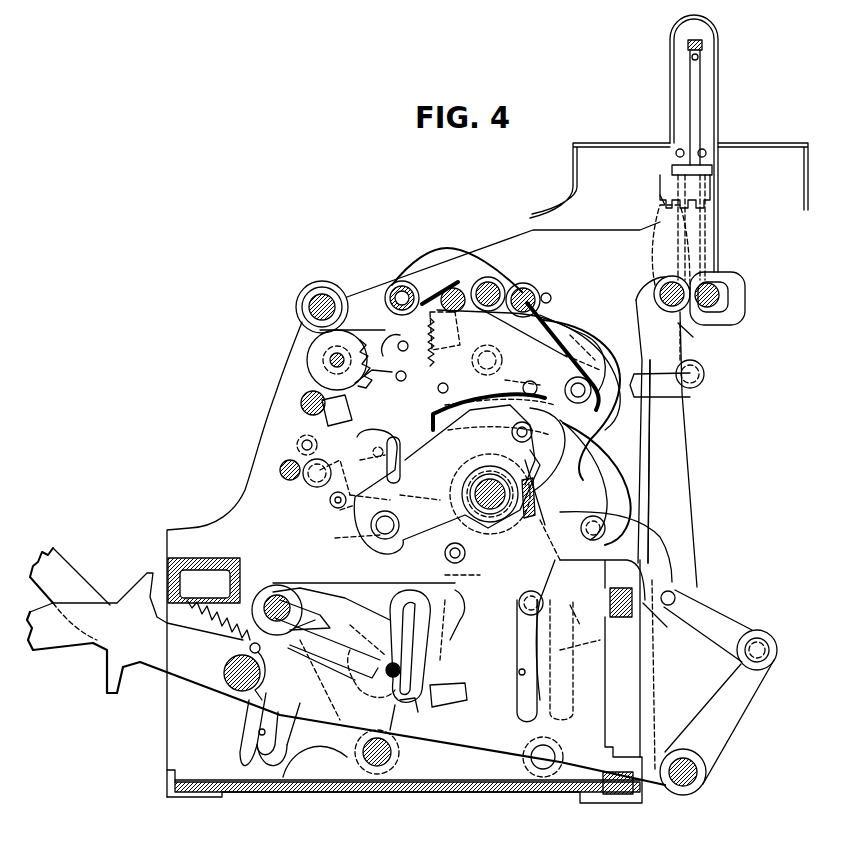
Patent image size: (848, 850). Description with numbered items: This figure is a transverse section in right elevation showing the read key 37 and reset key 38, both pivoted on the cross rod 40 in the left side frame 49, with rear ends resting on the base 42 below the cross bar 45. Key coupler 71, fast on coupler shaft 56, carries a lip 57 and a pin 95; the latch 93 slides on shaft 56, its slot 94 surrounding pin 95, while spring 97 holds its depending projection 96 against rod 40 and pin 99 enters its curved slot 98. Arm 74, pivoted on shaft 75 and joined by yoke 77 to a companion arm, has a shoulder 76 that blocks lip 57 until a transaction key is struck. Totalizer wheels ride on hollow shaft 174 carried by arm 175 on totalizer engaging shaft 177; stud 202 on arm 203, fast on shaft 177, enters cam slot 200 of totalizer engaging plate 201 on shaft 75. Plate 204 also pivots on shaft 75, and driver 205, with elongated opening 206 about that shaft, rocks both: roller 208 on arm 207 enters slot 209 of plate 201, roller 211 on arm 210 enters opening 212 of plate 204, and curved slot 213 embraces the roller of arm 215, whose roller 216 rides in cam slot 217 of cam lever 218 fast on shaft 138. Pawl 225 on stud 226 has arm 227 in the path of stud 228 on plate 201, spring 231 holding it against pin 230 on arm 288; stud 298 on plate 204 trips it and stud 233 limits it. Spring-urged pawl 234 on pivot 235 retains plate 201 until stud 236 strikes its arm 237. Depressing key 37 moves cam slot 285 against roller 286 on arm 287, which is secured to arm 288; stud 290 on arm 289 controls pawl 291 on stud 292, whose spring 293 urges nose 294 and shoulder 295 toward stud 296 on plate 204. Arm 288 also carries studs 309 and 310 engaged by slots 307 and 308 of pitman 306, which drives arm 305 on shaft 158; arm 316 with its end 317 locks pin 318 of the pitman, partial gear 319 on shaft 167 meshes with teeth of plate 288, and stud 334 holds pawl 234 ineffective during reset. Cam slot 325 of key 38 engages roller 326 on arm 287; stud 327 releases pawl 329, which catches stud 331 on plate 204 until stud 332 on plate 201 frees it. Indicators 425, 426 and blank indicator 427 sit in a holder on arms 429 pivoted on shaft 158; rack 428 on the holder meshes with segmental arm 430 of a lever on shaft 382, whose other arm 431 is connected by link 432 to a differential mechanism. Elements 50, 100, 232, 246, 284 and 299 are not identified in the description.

The read key 37 is at (62, 562).
The reset key 38 is at (50, 650).
The cross rod 40 is at (232, 670).
The base 42 is at (514, 790).
The cross bar 45 is at (610, 603).
The left side frame 49 is at (175, 733).
The stop bracket 50 is at (208, 558).
The coupler shaft 56 is at (297, 627).
The lip 57 is at (412, 706).
The key coupler 71 is at (277, 588).
The arm 74 is at (450, 612).
The shaft 75 is at (480, 488).
The shoulder 76 is at (443, 690).
The yoke 77 is at (537, 505).
The latch 93 is at (318, 617).
The slot 94 is at (382, 635).
The pin 95 is at (333, 674).
The depending projection 96 is at (266, 692).
The spring 97 is at (208, 604).
The curved slot 98 is at (400, 598).
The pin 99 is at (374, 685).
The arm 100 is at (412, 724).
The shaft 138 is at (393, 762).
The shaft 158 is at (699, 786).
The shaft 167 is at (340, 365).
The hollow shaft 174 is at (400, 281).
The arm 175 is at (449, 246).
The totalizer engaging shaft 177 is at (487, 281).
The cam slot 200 is at (598, 360).
The totalizer engaging plate 201 is at (575, 338).
The stud 202 is at (592, 410).
The arm 203 is at (560, 312).
The plate 204 is at (632, 472).
The driver 205 is at (517, 640).
The elongated opening 206 is at (428, 522).
The arm 207 is at (416, 492).
The roller 208 is at (342, 539).
The slot 209 is at (374, 497).
The arm 210 is at (589, 480).
The roller 211 is at (598, 520).
The opening 212 is at (553, 540).
The curved slot 213 is at (440, 630).
The arm 215 is at (341, 593).
The roller 216 is at (326, 683).
The cam slot 217 is at (258, 730).
The cam lever 218 is at (250, 748).
The pawl 225 is at (365, 380).
The stud 226 is at (470, 392).
The arm 227 is at (375, 462).
The stud 228 is at (302, 446).
The pin 230 is at (407, 463).
The spring 231 is at (325, 422).
The plate 232 is at (453, 331).
The stud 233 is at (375, 474).
The spring-urged pawl 234 is at (295, 406).
The pivot 235 is at (312, 480).
The stud 236 is at (333, 518).
The arm 237 is at (317, 487).
The stud 246 is at (525, 290).
The pin 284 is at (403, 358).
The cam slot 285 is at (584, 640).
The roller 286 is at (588, 617).
The arm 287 is at (563, 630).
The arm 288 is at (489, 412).
The arm 289 is at (500, 408).
The stud 290 is at (532, 396).
The pawl 291 is at (456, 280).
The stud 292 is at (521, 370).
The spring 293 is at (553, 300).
The nose 294 is at (499, 423).
The shoulder 295 is at (583, 372).
The stud 296 is at (591, 348).
The stud 298 is at (403, 332).
The stud 299 is at (506, 292).
The arm 305 is at (742, 702).
The pitman 306 is at (725, 615).
The elongated slot 307 is at (551, 449).
The elongated slot 308 is at (445, 575).
The stud 309 is at (512, 432).
The stud 310 is at (445, 553).
The rearwardly extending arm 316 is at (638, 520).
The irregularly formed end 317 is at (663, 610).
The pin 318 is at (676, 597).
The partial gear 319 is at (323, 360).
The cam slot 325 is at (518, 672).
The roller 326 is at (562, 660).
The stud 327 is at (462, 378).
The pawl 329 is at (454, 342).
The stud 331 is at (566, 327).
The stud 332 is at (546, 293).
The stud 334 is at (331, 503).
The shaft 382 is at (665, 290).
The indicator 425 is at (676, 148).
The indicator 426 is at (706, 142).
The blank indicator 427 is at (702, 70).
The rack 428 is at (712, 183).
The arms 429 is at (684, 444).
The segmental arm 430 is at (658, 248).
The arm 431 is at (692, 338).
The link 432 is at (666, 395).